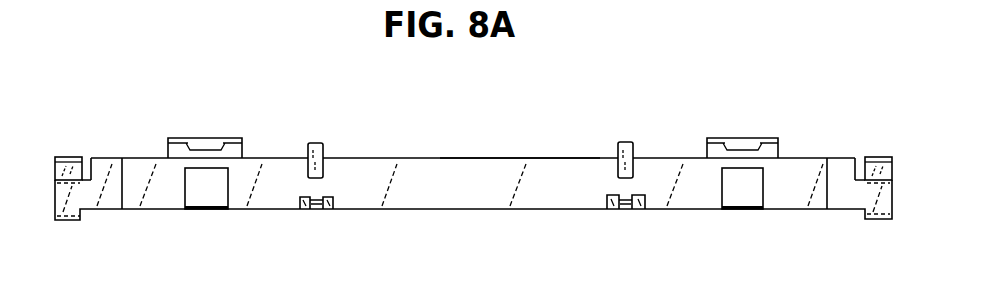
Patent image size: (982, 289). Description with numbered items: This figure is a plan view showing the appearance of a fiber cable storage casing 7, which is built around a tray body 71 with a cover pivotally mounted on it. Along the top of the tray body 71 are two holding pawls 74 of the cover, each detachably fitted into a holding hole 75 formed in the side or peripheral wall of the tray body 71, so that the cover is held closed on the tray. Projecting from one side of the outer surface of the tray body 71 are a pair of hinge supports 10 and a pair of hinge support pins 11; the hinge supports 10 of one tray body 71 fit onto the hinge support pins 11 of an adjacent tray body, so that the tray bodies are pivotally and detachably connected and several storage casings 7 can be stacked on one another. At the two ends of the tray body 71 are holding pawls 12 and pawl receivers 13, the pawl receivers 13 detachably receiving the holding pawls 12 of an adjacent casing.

The fiber cable storage casing 7 is at (431, 158).
The tray body 71 is at (520, 157).
The holding pawl 74 is at (209, 142).
The holding hole 75 is at (226, 197).
The hinge support 10 is at (316, 142).
The hinge support pin 11 is at (313, 211).
The holding pawl 12 is at (68, 220).
The pawl receiver 13 is at (70, 157).